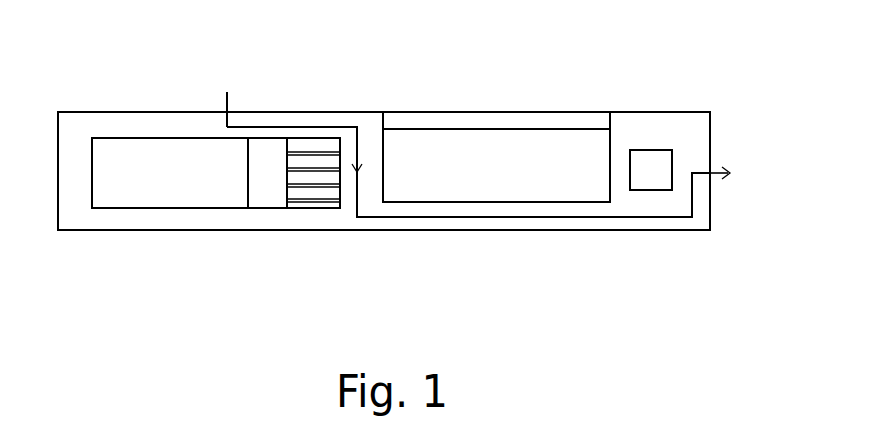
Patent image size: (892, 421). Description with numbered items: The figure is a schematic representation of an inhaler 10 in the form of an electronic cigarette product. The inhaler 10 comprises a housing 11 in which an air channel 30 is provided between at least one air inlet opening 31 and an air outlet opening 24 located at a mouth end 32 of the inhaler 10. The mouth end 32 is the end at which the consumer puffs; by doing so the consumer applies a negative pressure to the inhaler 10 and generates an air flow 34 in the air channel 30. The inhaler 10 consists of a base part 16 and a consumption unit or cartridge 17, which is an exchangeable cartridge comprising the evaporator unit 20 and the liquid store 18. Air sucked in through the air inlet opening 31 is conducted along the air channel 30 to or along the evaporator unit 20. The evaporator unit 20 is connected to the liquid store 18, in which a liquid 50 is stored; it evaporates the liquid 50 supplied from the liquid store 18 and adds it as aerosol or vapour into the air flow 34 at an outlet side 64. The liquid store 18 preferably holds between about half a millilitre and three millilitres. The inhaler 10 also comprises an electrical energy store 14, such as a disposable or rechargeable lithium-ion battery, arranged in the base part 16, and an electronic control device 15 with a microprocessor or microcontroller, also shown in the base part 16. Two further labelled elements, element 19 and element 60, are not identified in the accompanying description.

The inhaler 10 is at (404, 281).
The housing 11 is at (638, 113).
The electrical energy store 14 is at (474, 177).
The electronic control device 15 is at (650, 150).
The base part 16 is at (368, 113).
The consumption unit or cartridge 17 is at (188, 208).
The liquid store 18 is at (128, 208).
The gap 19 is at (255, 195).
The evaporator unit 20 is at (285, 211).
The air outlet opening 24 is at (712, 178).
The air channel 30 is at (525, 223).
The air inlet opening 31 is at (226, 100).
The mouth end 32 is at (710, 127).
The air flow 34 is at (627, 217).
The liquid 50 is at (152, 185).
The filter 60 is at (320, 193).
The outlet side 64 is at (340, 193).